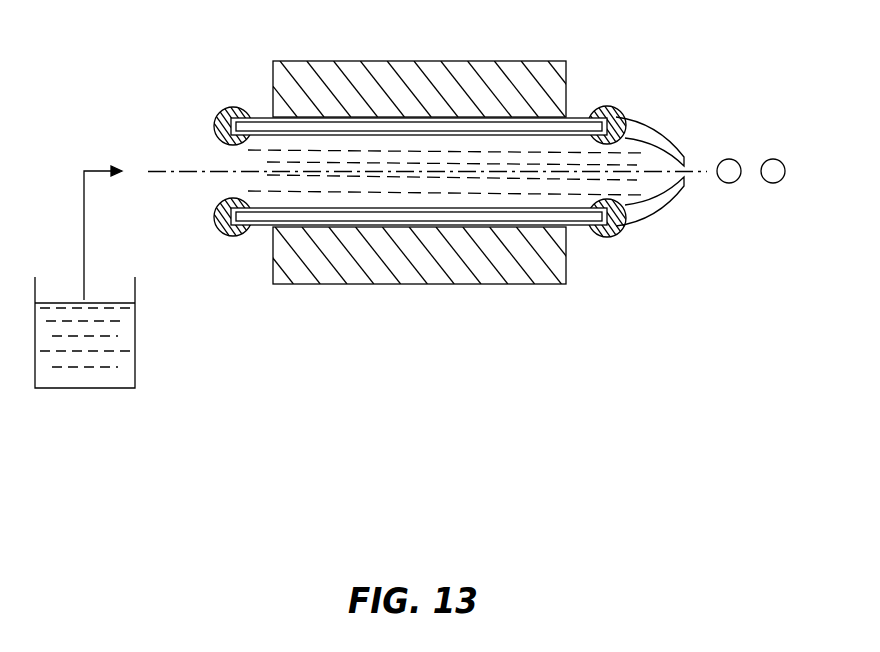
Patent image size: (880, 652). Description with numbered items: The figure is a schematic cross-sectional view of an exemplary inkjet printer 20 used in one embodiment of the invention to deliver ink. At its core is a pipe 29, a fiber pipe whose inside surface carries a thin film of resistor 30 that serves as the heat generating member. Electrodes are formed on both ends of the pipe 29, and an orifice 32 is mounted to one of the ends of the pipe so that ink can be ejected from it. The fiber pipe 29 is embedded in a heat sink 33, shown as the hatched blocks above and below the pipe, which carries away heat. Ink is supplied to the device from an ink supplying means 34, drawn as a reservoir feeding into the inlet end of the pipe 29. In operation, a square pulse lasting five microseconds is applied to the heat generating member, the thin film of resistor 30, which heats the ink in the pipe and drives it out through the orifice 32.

The inkjet printer 20 is at (466, 203).
The pipe 29 is at (419, 105).
The thin film of resistor 30 is at (573, 123).
The orifice 32 is at (680, 148).
The heat sink 33 is at (508, 60).
The ink supplying means 34 is at (135, 332).